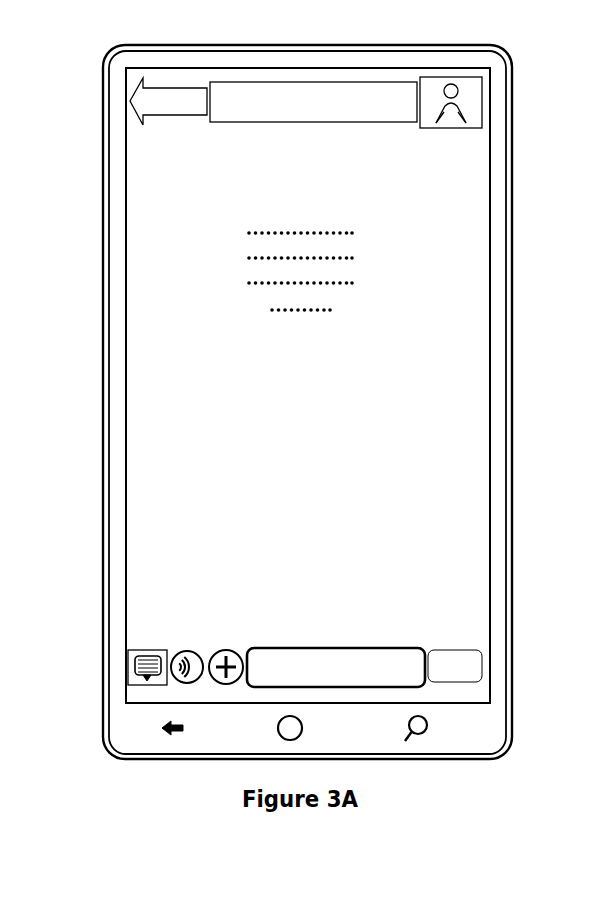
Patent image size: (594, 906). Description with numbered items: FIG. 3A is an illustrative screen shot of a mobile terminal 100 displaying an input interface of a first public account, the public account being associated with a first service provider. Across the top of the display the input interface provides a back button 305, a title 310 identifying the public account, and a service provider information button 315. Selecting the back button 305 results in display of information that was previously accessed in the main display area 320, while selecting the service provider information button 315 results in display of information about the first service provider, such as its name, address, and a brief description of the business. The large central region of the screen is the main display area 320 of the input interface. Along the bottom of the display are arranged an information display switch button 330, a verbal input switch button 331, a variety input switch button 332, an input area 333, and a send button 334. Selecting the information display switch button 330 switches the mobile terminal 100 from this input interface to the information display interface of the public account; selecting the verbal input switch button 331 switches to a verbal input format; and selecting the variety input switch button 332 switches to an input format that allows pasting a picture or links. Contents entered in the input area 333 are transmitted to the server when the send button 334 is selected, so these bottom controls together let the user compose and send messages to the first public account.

The mobile terminal 100 is at (80, 70).
The back button 305 is at (137, 113).
The title 310 is at (393, 122).
The service provider information button 315 is at (450, 126).
The main display area 320 is at (140, 387).
The information display switch button 330 is at (128, 657).
The verbal input switch button 331 is at (178, 657).
The variety input switch button 332 is at (222, 655).
The input area 333 is at (413, 647).
The send button 334 is at (482, 667).